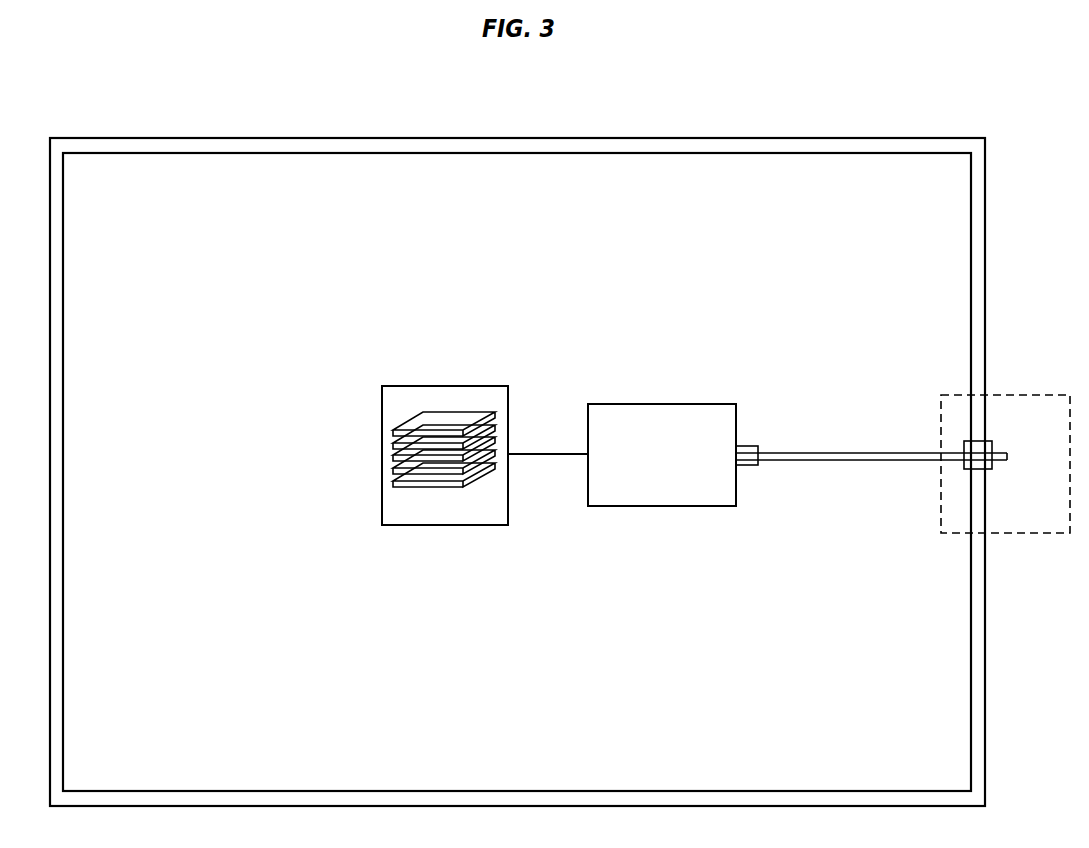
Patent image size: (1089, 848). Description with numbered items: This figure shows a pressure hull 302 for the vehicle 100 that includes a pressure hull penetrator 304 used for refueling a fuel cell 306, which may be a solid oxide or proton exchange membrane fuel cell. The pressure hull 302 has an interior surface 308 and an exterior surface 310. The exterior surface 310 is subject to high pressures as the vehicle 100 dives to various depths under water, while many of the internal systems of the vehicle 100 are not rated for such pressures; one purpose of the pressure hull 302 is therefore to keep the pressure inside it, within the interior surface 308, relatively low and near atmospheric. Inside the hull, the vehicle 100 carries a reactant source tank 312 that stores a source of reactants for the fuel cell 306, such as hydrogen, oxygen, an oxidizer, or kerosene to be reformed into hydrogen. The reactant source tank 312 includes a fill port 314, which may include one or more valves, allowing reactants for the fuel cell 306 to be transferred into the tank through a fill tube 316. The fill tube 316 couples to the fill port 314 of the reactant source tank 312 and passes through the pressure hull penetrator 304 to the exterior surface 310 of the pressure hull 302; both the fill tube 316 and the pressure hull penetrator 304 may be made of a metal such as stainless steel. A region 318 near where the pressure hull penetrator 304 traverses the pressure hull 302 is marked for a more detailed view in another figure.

The vehicle 100 is at (238, 76).
The pressure hull 302 is at (679, 137).
The pressure hull penetrator 304 is at (992, 445).
The fuel cell 306 is at (461, 517).
The interior surface 308 is at (944, 326).
The exterior surface 310 is at (1007, 327).
The reactant source tank 312 is at (678, 486).
The fill port 314 is at (748, 446).
The fill tube 316 is at (850, 461).
The region 318 is at (1056, 534).